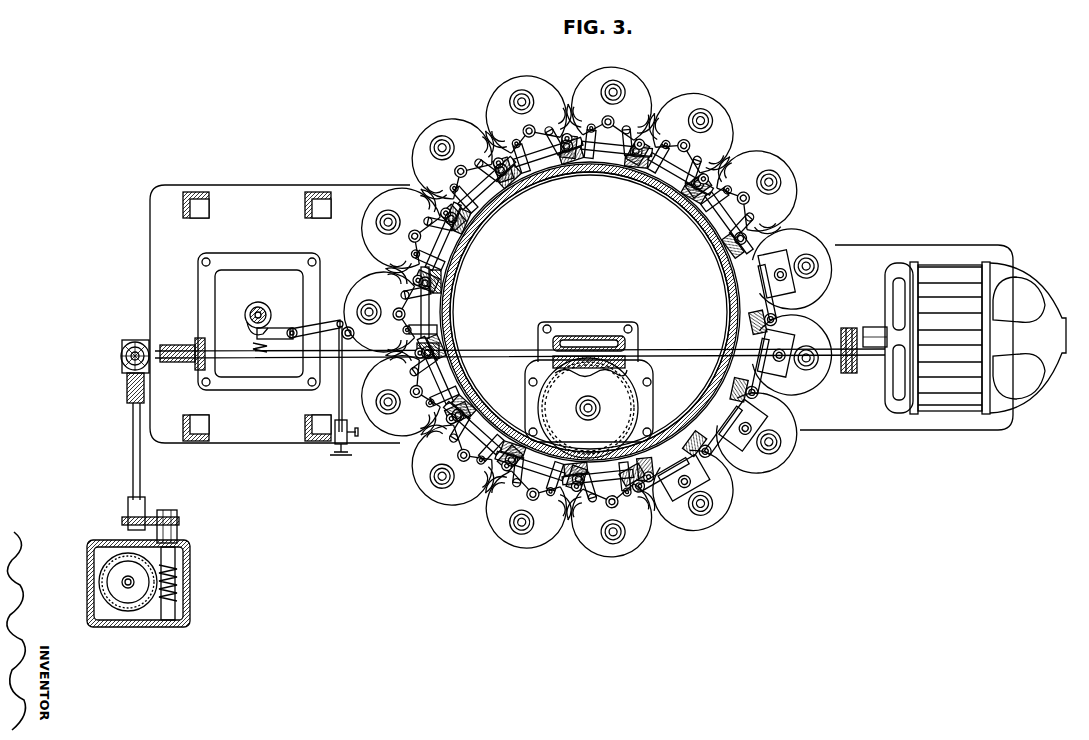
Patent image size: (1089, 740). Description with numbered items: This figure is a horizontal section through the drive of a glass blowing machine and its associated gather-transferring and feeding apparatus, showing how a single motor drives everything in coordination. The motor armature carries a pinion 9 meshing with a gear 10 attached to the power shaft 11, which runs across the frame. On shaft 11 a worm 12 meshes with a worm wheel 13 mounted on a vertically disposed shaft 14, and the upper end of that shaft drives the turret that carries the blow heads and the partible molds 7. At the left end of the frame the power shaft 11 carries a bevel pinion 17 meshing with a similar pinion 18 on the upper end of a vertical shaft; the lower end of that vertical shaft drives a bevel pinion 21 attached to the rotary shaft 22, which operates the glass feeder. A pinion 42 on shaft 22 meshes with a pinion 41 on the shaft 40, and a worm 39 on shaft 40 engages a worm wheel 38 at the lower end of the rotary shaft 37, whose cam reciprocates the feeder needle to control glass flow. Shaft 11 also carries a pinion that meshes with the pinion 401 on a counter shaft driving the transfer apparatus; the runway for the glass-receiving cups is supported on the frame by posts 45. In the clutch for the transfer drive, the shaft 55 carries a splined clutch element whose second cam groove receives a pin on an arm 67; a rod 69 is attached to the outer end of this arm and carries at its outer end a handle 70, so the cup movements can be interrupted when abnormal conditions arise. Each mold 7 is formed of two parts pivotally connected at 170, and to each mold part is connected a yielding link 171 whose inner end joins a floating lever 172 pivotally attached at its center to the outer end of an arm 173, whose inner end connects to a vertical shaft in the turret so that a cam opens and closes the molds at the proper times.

The partible mold 7 is at (556, 545).
The pinion 9 is at (852, 327).
The gear 10 is at (850, 374).
The shaft 11 is at (676, 352).
The worm 12 is at (602, 343).
The worm wheel 13 is at (630, 368).
The vertically disposed shaft 14 is at (583, 405).
The bevel pinion 17 is at (138, 341).
The bevel pinion 18 is at (121, 355).
The bevel pinion 21 is at (124, 377).
The shaft 22 is at (131, 432).
The rotary shaft 37 is at (120, 585).
The worm wheel 38 is at (135, 605).
The worm 39 is at (180, 580).
The shaft 40 is at (185, 552).
The pinion 41 is at (180, 520).
The pinion 42 is at (121, 520).
The posts 45 is at (196, 443).
The shaft 55 is at (263, 305).
The arm 67 is at (341, 319).
The rod 69 is at (336, 398).
The handle 70 is at (343, 462).
The pivot 170 is at (722, 492).
The yielding link 171 is at (745, 476).
The floating lever 172 is at (690, 466).
The arm 173 is at (661, 468).
The pinion 401 is at (198, 342).